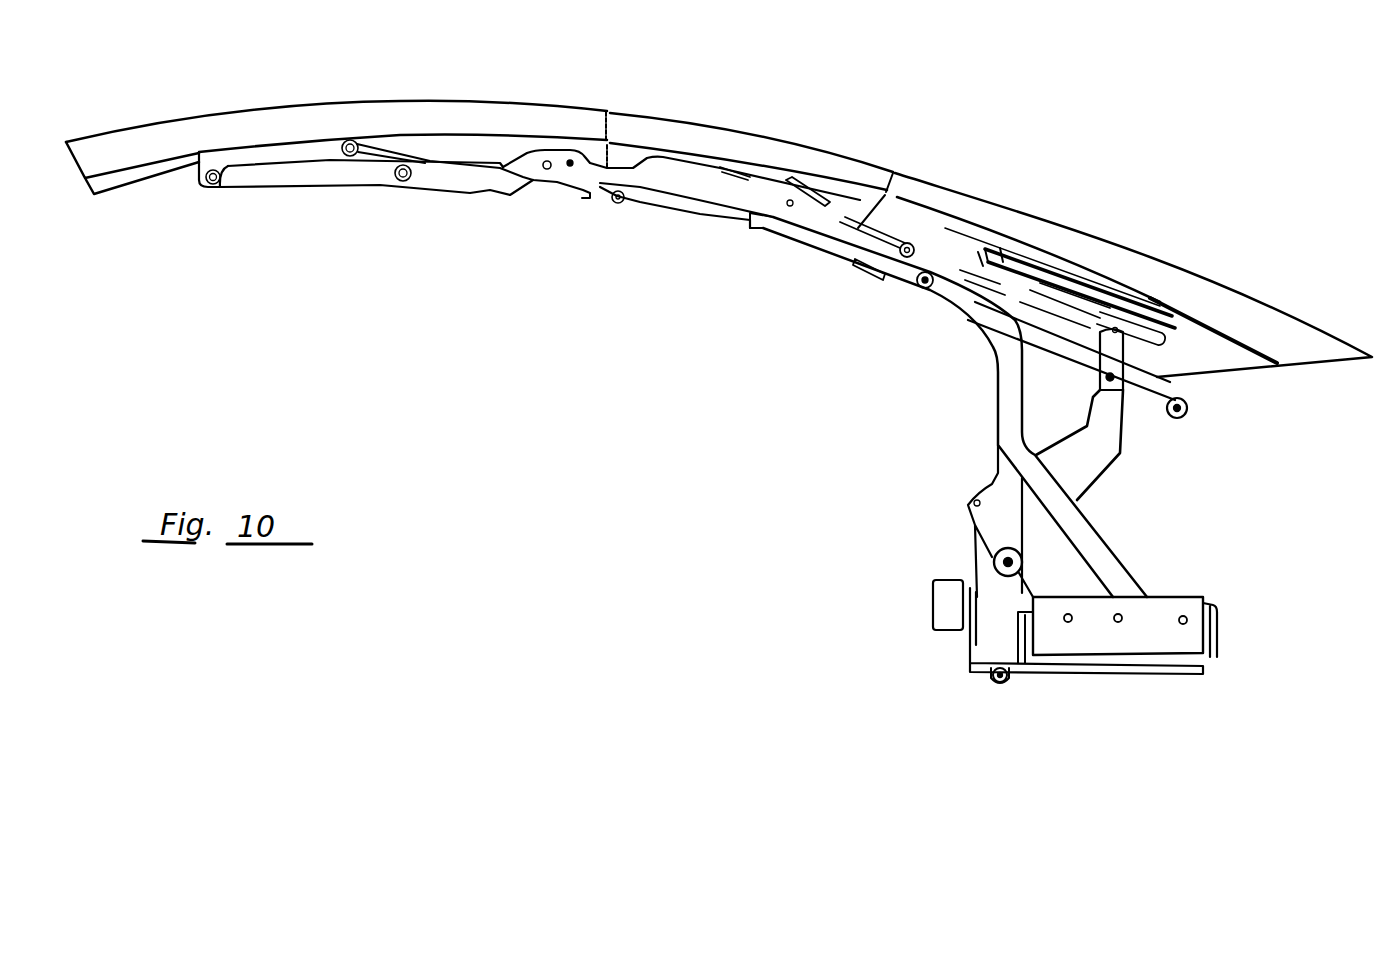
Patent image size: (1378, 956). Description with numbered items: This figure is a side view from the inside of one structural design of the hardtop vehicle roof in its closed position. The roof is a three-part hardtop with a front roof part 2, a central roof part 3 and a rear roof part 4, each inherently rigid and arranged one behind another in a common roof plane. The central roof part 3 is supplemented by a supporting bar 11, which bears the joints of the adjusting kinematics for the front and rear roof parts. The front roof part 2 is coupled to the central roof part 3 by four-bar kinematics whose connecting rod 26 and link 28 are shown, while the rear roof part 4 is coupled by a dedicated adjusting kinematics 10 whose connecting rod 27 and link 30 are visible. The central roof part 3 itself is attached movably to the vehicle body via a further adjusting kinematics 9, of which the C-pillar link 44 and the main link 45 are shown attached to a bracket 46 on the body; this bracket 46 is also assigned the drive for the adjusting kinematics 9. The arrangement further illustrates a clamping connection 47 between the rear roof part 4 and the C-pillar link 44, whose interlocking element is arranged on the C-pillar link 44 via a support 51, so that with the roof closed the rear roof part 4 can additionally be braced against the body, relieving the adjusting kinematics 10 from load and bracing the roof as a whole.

The front roof part 2 is at (133, 143).
The central roof part 3 is at (754, 150).
The rear roof part 4 is at (1147, 273).
The adjusting kinematics 9 is at (923, 488).
The adjusting kinematics 10 is at (1176, 364).
The supporting bar 11 is at (675, 175).
The connecting rod 26 is at (270, 150).
The connecting rod 27 is at (1162, 386).
The link 28 is at (308, 172).
The link 30 is at (1072, 357).
The C-pillar link 44 is at (1100, 545).
The main link 45 is at (1003, 470).
The bracket 46 is at (943, 653).
The clamping connection 47 is at (1072, 276).
The support 51 is at (1107, 434).